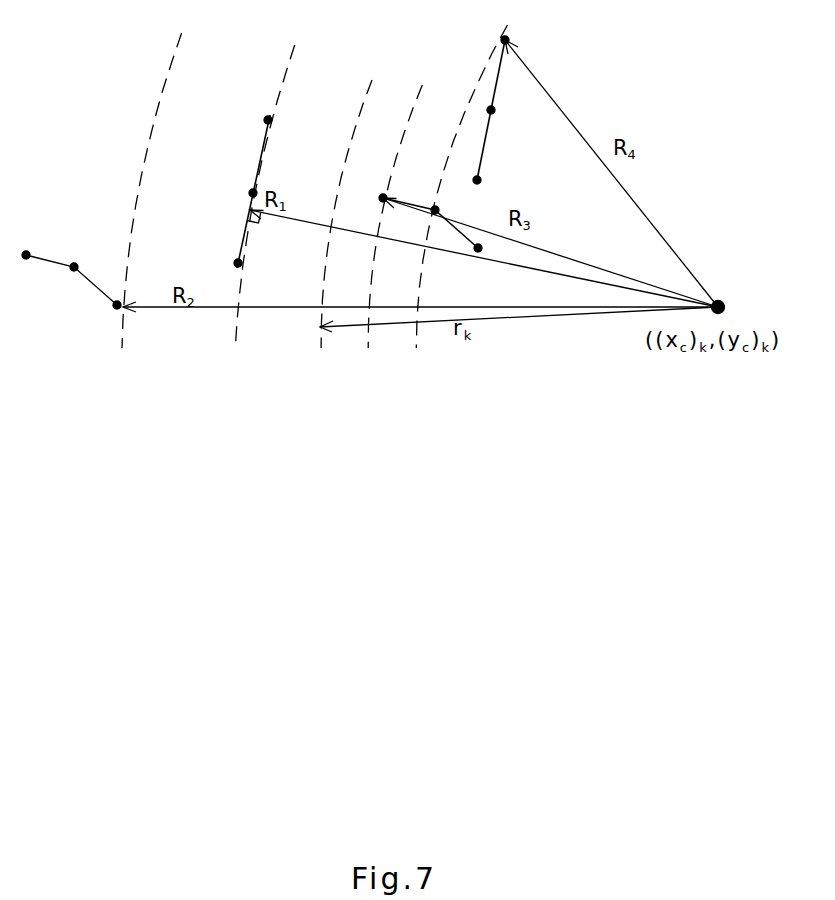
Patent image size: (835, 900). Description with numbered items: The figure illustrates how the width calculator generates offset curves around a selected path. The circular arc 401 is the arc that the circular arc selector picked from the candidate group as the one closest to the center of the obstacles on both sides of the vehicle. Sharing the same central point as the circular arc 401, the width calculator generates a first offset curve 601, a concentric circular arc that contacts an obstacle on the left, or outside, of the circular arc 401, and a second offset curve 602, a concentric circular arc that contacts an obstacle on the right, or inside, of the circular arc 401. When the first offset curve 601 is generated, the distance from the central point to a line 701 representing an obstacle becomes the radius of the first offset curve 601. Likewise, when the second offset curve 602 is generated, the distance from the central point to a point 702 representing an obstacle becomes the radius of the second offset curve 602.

The circular arc 401 is at (362, 108).
The first offset curve 601 is at (279, 90).
The second offset curve 602 is at (407, 127).
The line representing an obstacle 701 is at (259, 159).
The point representing an obstacle 702 is at (385, 193).